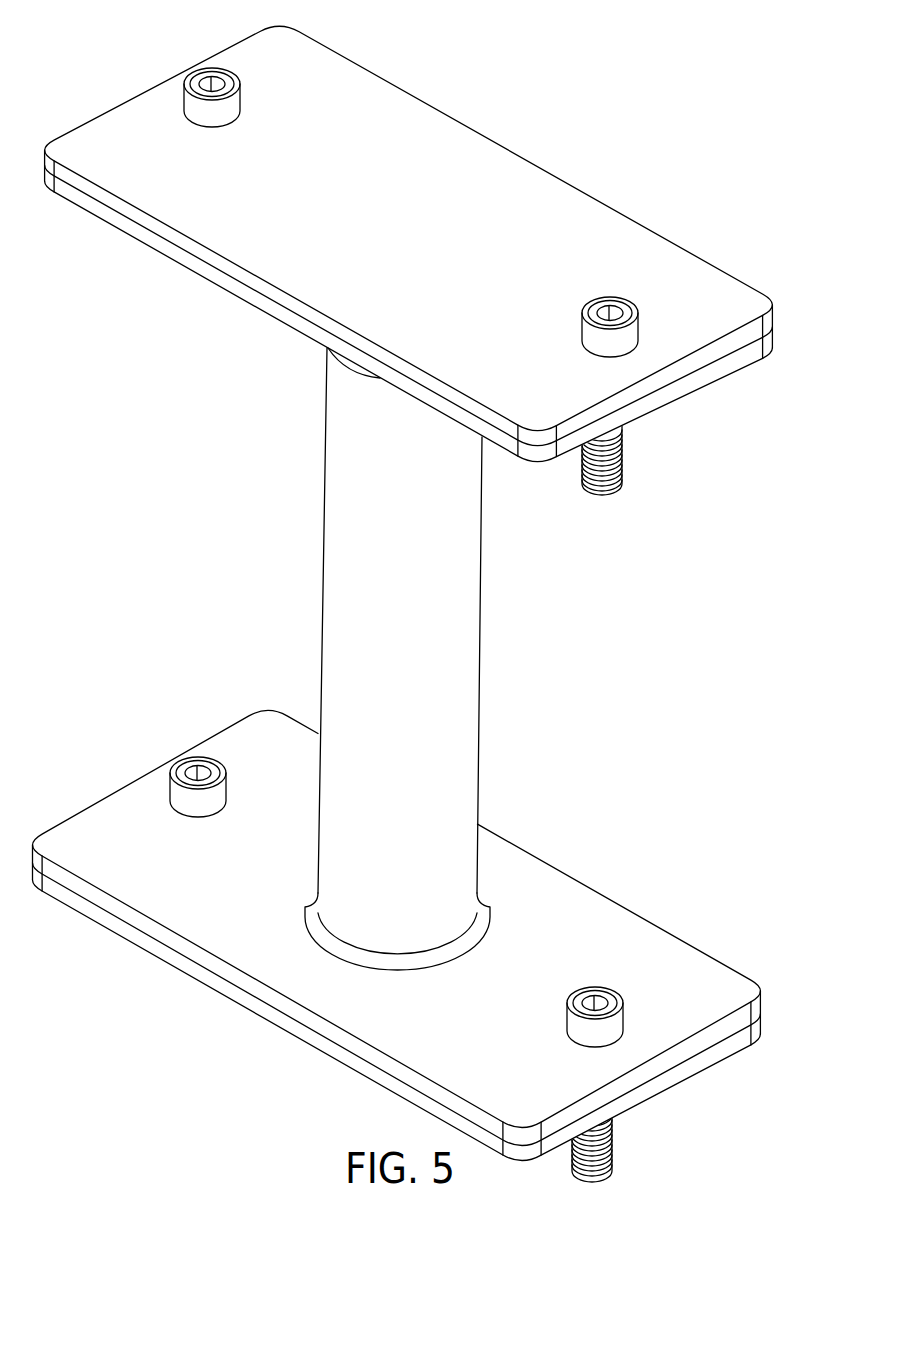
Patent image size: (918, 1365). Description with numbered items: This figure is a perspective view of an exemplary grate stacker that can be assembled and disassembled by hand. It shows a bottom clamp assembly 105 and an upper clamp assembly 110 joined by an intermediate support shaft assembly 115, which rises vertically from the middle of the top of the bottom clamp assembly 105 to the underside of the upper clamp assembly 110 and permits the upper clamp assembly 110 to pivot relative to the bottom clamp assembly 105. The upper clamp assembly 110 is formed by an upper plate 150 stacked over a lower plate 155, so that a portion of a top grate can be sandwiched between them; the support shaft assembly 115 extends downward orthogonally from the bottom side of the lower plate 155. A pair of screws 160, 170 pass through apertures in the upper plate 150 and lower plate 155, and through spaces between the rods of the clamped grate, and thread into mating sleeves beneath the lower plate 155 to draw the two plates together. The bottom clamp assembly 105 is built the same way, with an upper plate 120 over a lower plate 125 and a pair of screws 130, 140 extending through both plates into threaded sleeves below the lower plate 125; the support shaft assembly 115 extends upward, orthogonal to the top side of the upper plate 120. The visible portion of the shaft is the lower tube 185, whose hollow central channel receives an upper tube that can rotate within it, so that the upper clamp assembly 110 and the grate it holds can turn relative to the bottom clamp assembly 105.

The bottom clamp assembly 105 is at (397, 935).
The upper clamp assembly 110 is at (418, 243).
The intermediate support shaft assembly 115 is at (410, 659).
The upper plate 120 is at (560, 892).
The lower plate 125 is at (280, 1017).
The screw 130 is at (582, 1030).
The screw 140 is at (188, 803).
The upper plate 150 is at (658, 265).
The lower plate 155 is at (212, 273).
The screw 160 is at (592, 342).
The screw 170 is at (195, 110).
The lower tube 185 is at (457, 575).